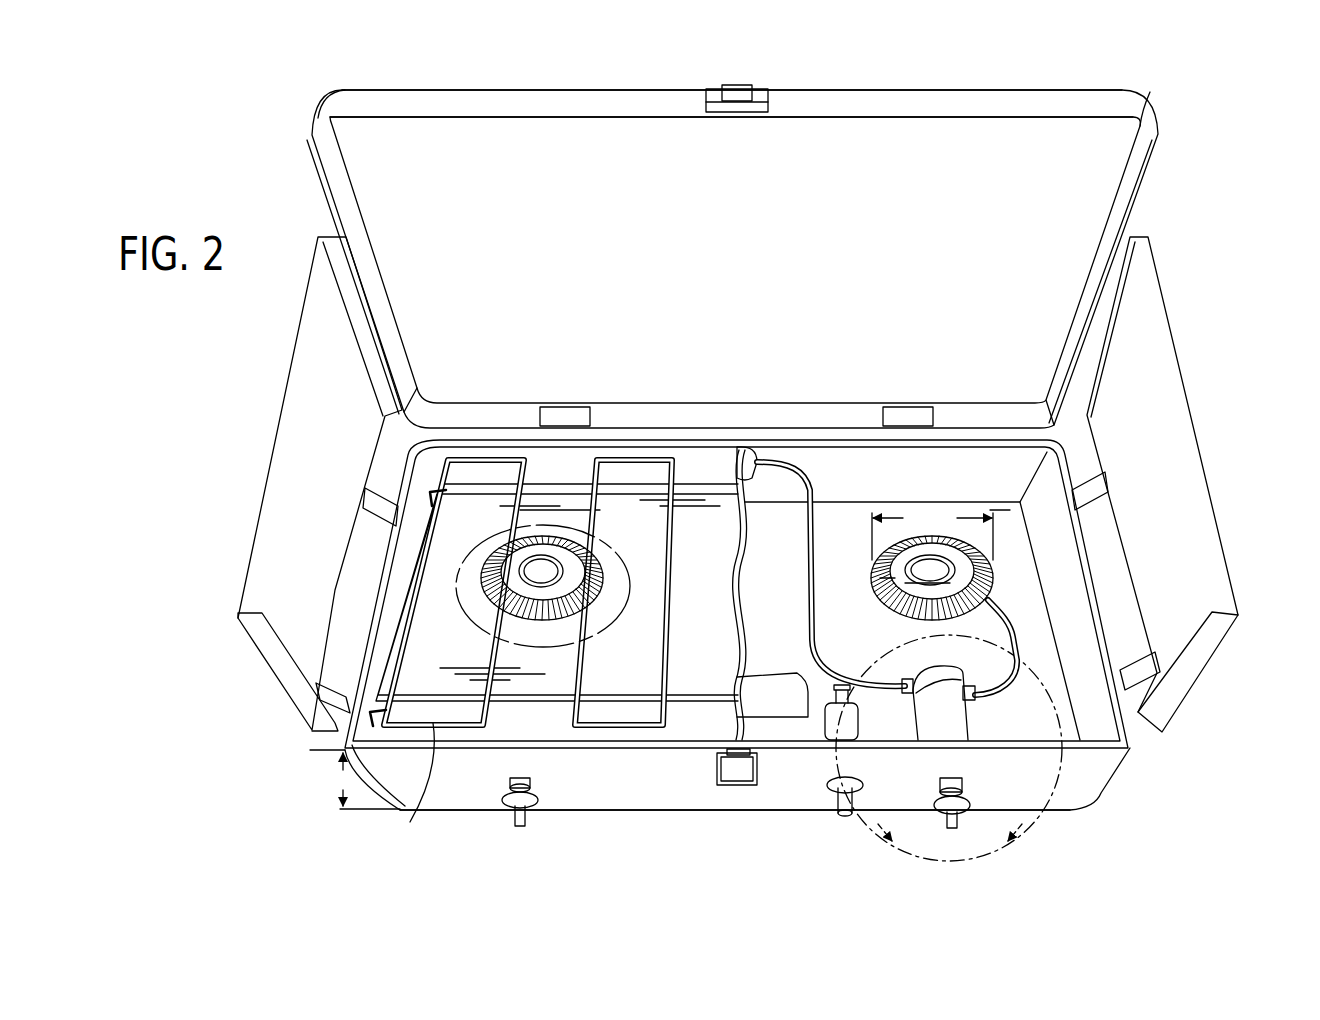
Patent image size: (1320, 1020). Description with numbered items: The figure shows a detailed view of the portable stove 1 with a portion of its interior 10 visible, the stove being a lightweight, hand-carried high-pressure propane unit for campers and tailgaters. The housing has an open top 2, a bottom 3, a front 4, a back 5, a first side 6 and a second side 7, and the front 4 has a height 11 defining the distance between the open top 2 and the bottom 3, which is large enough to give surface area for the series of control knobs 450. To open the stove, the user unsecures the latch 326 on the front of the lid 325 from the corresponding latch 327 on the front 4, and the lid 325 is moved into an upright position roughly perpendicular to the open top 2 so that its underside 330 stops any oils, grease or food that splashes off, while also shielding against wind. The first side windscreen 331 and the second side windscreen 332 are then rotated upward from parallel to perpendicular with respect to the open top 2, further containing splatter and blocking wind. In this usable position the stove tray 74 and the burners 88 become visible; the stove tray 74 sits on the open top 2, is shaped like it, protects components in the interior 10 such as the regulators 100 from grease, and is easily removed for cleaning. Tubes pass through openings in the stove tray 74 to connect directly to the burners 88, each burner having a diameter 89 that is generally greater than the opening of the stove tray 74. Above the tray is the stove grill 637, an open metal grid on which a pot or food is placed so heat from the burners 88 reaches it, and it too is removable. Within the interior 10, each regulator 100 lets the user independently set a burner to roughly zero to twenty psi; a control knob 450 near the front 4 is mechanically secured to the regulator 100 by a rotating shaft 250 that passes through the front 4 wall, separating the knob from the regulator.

The portable stove 1 is at (243, 742).
The open top 2 is at (1130, 745).
The bottom 3 is at (651, 809).
The front 4 is at (612, 778).
The back 5 is at (828, 470).
The first side 6 is at (1126, 630).
The second side 7 is at (346, 633).
The interior 10 is at (793, 558).
The height 11 is at (340, 778).
The stove tray 74 is at (711, 571).
The burners 88 is at (480, 592).
The diameter 89 is at (932, 532).
The regulator 100 is at (948, 716).
The rotating shaft 250 is at (967, 803).
The lid 325 is at (631, 97).
The latch 326 is at (740, 94).
The corresponding latch 327 is at (740, 788).
The underside 330 is at (762, 267).
The first side windscreen 331 is at (292, 488).
The second side windscreen 332 is at (1180, 482).
The control knob 450 is at (512, 812).
The stove grill 637 is at (408, 790).